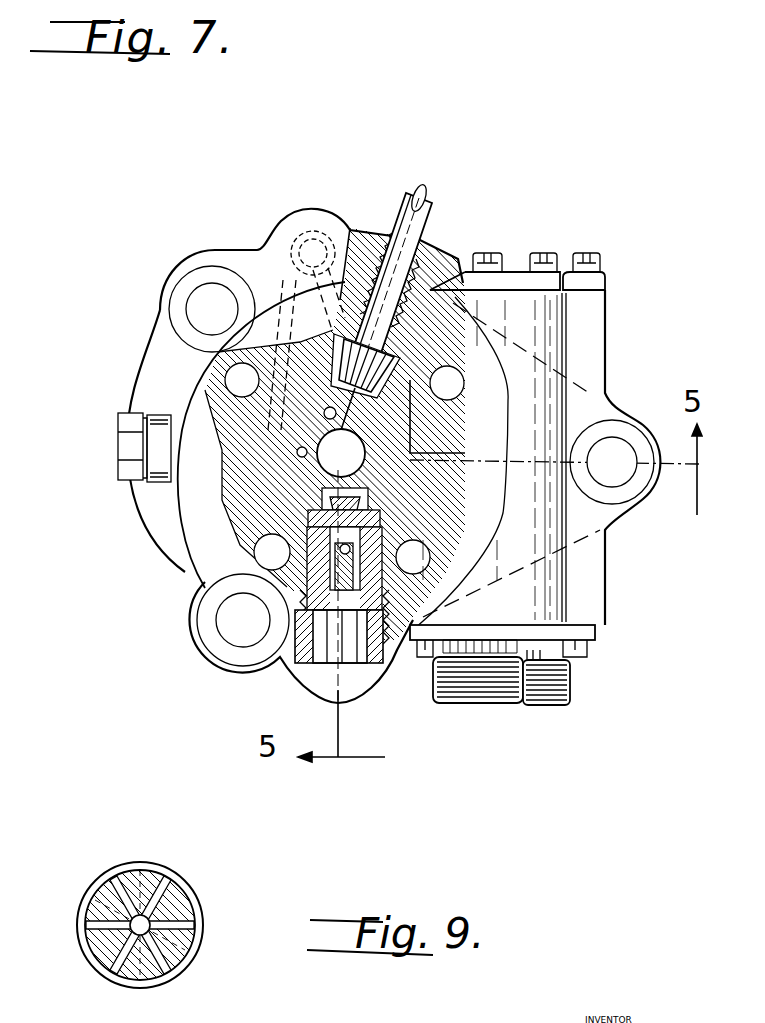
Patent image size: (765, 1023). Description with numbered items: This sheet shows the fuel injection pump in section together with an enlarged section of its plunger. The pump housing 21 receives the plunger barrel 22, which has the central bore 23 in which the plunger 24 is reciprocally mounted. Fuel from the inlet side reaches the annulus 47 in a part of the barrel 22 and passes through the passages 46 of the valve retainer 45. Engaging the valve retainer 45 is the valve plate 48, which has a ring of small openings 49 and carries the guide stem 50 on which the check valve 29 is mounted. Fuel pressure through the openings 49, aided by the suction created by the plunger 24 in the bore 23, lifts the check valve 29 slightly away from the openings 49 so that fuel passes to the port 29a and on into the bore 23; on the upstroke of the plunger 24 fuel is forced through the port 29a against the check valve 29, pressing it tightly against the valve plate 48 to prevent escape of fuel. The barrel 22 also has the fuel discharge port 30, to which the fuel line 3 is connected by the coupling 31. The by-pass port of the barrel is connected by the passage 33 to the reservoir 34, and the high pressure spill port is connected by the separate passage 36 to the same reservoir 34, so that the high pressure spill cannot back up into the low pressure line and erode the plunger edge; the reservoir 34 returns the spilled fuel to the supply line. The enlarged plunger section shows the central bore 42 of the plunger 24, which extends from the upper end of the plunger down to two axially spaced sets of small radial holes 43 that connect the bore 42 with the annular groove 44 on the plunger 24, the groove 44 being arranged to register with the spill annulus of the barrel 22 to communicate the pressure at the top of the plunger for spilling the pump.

In FIG. 7, the fuel line 3 is at (426, 214).
In FIG. 7, the pump housing 21 is at (531, 479).
In FIG. 7, the plunger barrel 22 is at (475, 363).
In FIG. 7, the central bore 23 is at (372, 451).
In FIG. 9, the plunger 24 is at (108, 892).
In FIG. 7, the check valve 29 is at (307, 490).
In FIG. 7, the port 29a is at (212, 432).
In FIG. 7, the fuel discharge port 30 is at (466, 440).
In FIG. 7, the coupling 31 is at (445, 258).
In FIG. 7, the passage 33 is at (347, 250).
In FIG. 7, the reservoir 34 is at (313, 245).
In FIG. 7, the passage 36 is at (285, 278).
In FIG. 9, the central bore 42 is at (150, 930).
In FIG. 9, the radial holes 43 is at (162, 878).
In FIG. 9, the annular groove 44 is at (198, 900).
In FIG. 7, the valve retainer 45 is at (313, 570).
In FIG. 7, the passages 46 is at (387, 647).
In FIG. 7, the annulus 47 is at (345, 546).
In FIG. 7, the valve plate 48 is at (397, 512).
In FIG. 7, the openings 49 is at (316, 517).
In FIG. 7, the guide stem 50 is at (440, 512).